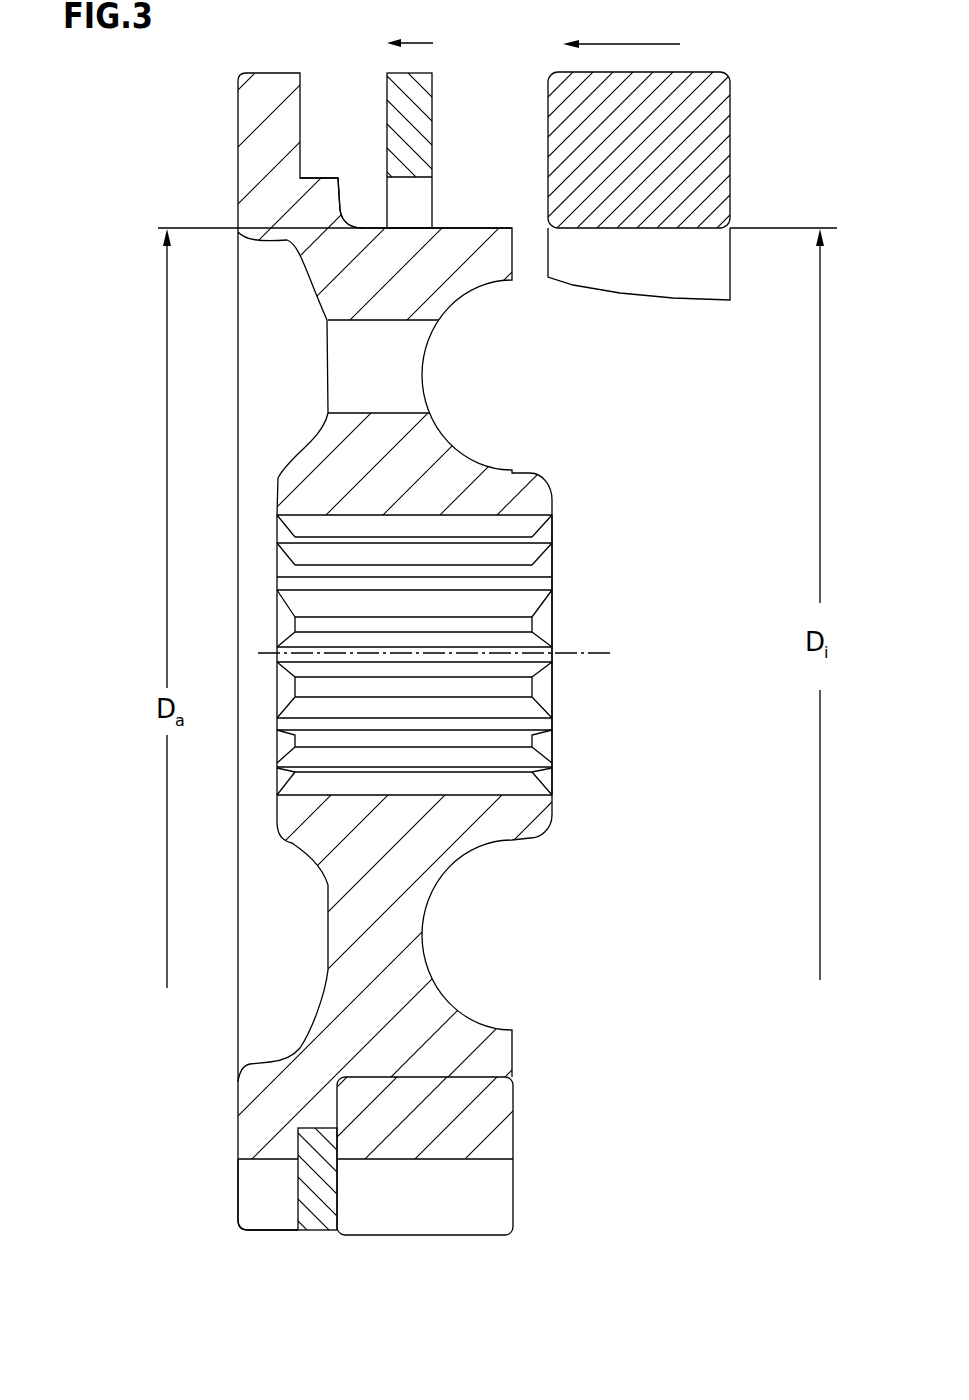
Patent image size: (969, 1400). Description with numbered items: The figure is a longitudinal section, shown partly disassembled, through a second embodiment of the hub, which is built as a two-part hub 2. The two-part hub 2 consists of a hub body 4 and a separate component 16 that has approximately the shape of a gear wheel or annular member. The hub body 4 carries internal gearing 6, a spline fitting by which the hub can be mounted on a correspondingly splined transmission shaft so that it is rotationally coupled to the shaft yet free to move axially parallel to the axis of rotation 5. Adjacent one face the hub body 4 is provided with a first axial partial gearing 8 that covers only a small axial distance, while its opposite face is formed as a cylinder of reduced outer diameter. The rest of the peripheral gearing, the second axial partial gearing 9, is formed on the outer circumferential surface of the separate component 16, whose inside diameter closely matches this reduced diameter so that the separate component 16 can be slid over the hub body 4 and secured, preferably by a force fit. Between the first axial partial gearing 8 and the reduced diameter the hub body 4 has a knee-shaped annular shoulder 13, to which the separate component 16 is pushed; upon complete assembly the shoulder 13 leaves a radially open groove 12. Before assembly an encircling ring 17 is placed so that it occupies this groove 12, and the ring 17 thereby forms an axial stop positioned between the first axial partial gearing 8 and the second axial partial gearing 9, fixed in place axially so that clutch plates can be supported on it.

The two-part hub 2 is at (118, 272).
The hub body 4 is at (460, 282).
The axis of rotation 5 is at (590, 650).
The internal gearing 6 is at (540, 568).
The first axial partial gearing 8 is at (250, 1170).
The second axial partial gearing 9 is at (497, 1223).
The radially open groove 12 is at (293, 1254).
The shoulder 13 is at (327, 162).
The separate component 16 is at (702, 88).
The ring 17 is at (420, 107).